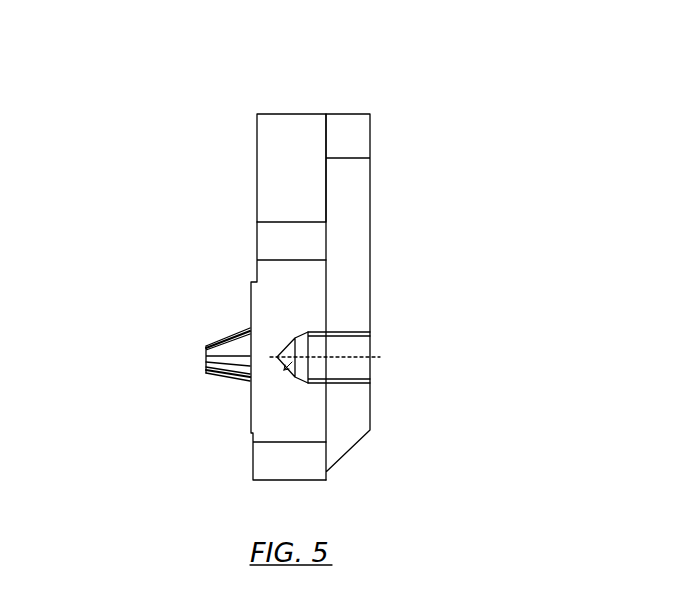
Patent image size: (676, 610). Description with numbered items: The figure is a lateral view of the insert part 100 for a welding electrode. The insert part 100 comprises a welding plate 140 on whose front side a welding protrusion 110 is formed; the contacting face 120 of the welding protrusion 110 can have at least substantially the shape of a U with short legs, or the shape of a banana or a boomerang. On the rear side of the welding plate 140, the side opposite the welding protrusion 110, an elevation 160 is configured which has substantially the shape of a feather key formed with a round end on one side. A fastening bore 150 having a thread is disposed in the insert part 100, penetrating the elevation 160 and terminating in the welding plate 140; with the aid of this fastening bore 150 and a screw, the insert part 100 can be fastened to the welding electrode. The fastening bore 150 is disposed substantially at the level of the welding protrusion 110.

The insert part 100 is at (445, 122).
The welding protrusion 110 is at (211, 376).
The contacting face 120 is at (202, 353).
The welding plate 140 is at (268, 190).
The fastening bore 150 is at (386, 357).
The elevation 160 is at (362, 208).